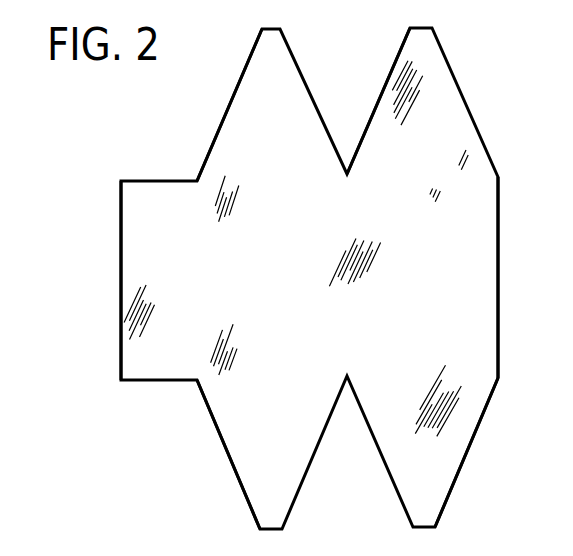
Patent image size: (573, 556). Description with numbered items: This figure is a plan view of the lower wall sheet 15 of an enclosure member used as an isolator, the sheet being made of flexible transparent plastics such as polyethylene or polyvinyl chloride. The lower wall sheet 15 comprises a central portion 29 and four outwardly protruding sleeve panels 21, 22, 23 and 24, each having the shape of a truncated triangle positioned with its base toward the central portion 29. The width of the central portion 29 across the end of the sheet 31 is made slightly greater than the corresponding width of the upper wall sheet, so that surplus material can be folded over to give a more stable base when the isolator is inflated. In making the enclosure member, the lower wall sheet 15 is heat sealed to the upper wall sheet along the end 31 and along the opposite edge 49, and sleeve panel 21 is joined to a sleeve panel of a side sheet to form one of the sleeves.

The lower wall sheet 15 is at (98, 267).
The sleeve panel 21 is at (233, 437).
The sleeve panel 22 is at (452, 439).
The sleeve panel 23 is at (243, 86).
The sleeve panel 24 is at (407, 53).
The central portion 29 is at (296, 249).
The end of the sheet 31 is at (120, 207).
The edge of the lower wall sheet 49 is at (493, 237).